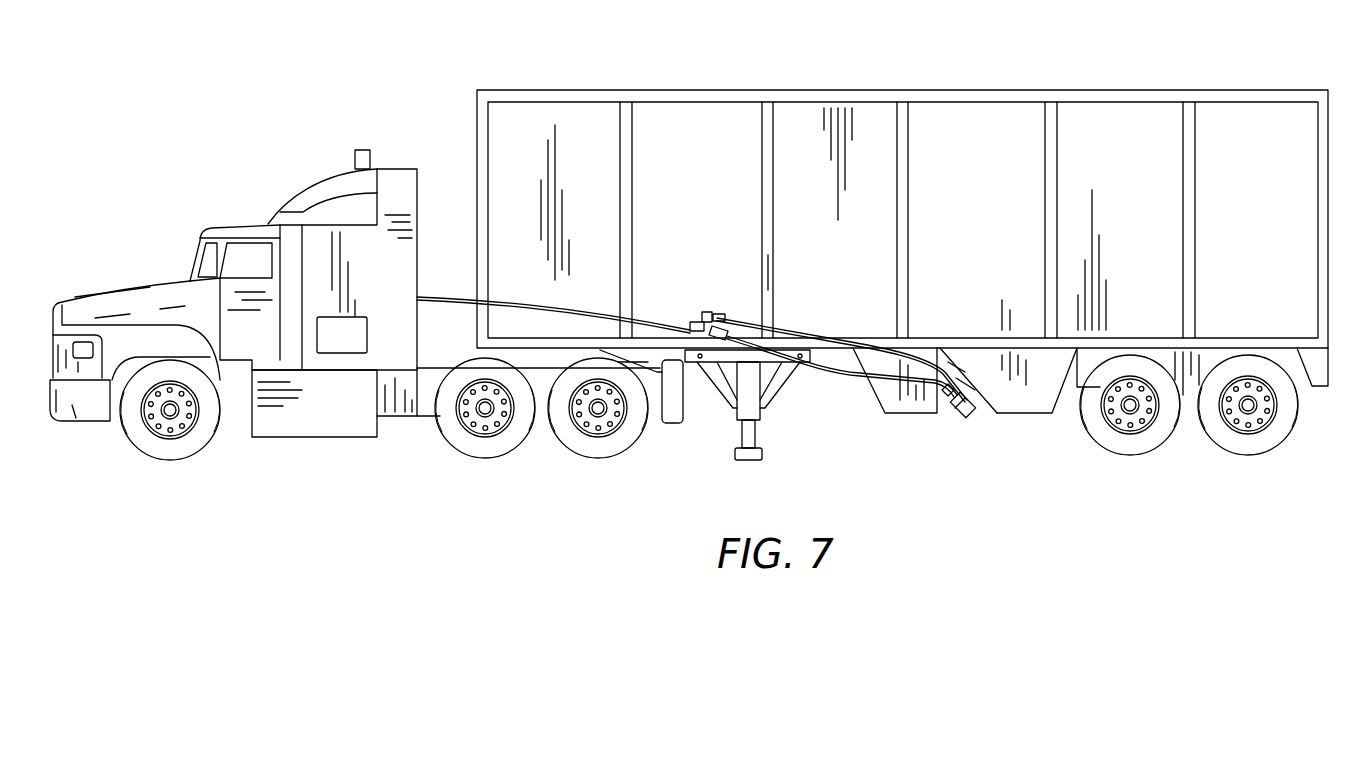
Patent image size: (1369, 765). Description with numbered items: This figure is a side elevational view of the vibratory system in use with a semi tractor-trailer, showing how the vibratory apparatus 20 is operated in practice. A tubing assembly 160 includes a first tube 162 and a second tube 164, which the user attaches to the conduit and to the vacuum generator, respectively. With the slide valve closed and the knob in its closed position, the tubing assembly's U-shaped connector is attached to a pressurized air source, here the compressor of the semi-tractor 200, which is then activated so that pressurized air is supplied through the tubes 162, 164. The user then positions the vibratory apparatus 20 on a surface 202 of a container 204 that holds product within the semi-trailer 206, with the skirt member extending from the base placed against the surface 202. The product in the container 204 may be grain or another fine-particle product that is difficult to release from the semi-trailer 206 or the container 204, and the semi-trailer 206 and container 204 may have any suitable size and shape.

The vibratory apparatus 20 is at (955, 417).
The tubing assembly 160 is at (890, 391).
The first tube 162 is at (830, 376).
The second tube 164 is at (853, 337).
The semi-tractor 200 is at (333, 424).
The surface 202 is at (930, 356).
The container 204 is at (1015, 400).
The semi-trailer 206 is at (1223, 127).